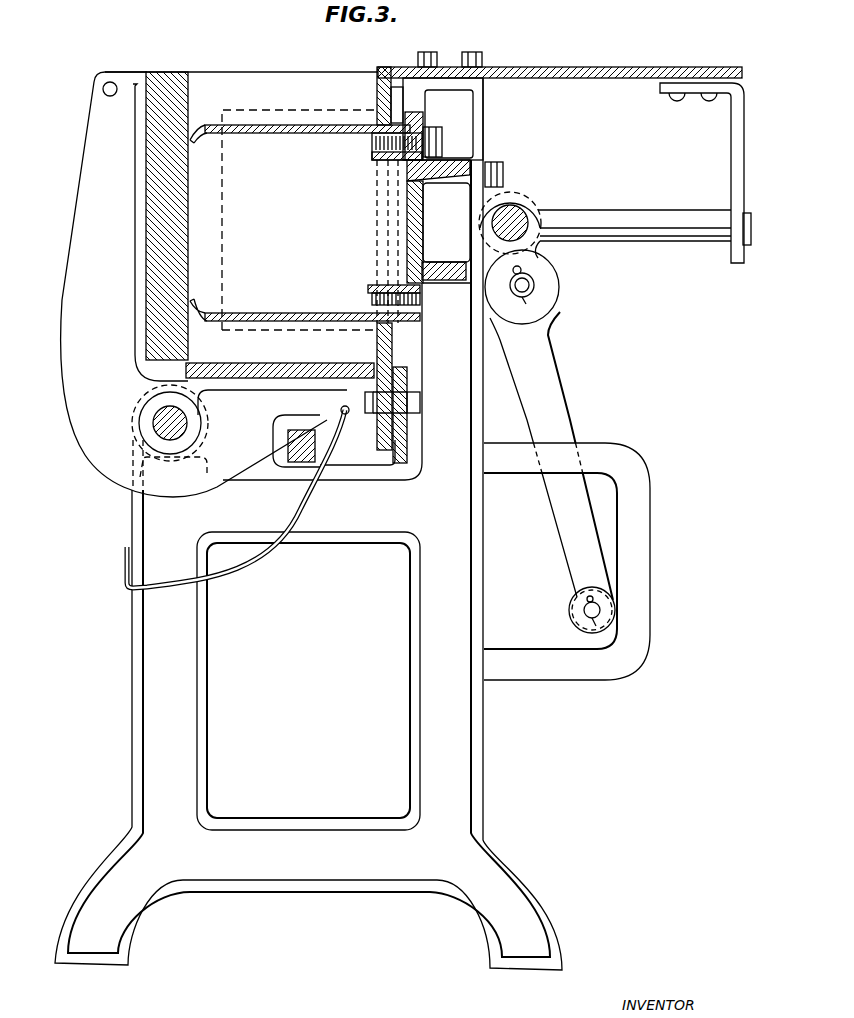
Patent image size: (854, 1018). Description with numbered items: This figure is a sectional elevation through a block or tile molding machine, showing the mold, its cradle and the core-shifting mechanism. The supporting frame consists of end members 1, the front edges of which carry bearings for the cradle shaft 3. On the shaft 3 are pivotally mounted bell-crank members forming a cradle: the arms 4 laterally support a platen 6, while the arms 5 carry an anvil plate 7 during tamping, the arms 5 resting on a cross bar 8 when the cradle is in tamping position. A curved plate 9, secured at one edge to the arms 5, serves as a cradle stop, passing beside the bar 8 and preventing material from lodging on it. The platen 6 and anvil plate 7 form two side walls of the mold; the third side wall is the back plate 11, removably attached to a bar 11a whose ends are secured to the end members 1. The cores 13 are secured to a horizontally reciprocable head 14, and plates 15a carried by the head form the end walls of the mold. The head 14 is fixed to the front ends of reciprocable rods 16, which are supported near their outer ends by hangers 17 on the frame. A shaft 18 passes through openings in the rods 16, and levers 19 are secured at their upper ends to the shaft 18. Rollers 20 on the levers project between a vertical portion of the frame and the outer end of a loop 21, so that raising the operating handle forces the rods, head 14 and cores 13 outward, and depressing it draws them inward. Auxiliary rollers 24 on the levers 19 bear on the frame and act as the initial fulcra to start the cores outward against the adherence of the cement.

The end member 1 is at (457, 752).
The cradle shaft 3 is at (165, 428).
The arm 4 is at (80, 220).
The arm 5 is at (223, 430).
The platen 6 is at (172, 155).
The anvil plate 7 is at (318, 364).
The cross bar 8 is at (288, 440).
The plate 9 is at (250, 568).
The back plate 11 is at (376, 97).
The bar 11a is at (395, 383).
The core 13 is at (262, 313).
The head 14 is at (420, 240).
The plate 15a is at (262, 80).
The rod 16 is at (638, 212).
The hanger 17 is at (733, 146).
The shaft 18 is at (512, 220).
The lever 19 is at (548, 340).
The roller 20 is at (570, 615).
The loop 21 is at (637, 602).
The roller 24 is at (543, 288).